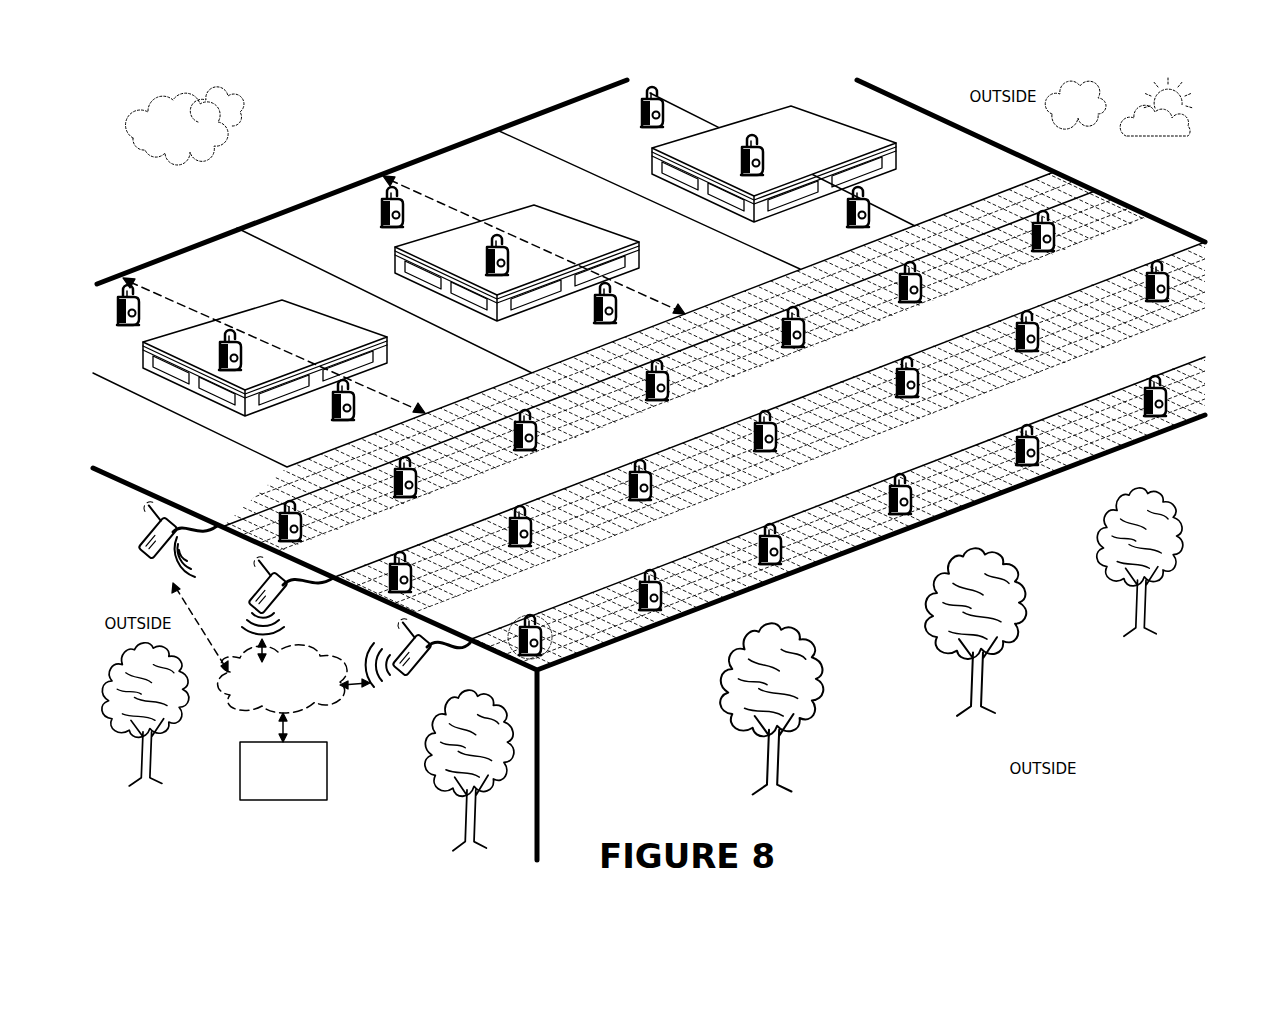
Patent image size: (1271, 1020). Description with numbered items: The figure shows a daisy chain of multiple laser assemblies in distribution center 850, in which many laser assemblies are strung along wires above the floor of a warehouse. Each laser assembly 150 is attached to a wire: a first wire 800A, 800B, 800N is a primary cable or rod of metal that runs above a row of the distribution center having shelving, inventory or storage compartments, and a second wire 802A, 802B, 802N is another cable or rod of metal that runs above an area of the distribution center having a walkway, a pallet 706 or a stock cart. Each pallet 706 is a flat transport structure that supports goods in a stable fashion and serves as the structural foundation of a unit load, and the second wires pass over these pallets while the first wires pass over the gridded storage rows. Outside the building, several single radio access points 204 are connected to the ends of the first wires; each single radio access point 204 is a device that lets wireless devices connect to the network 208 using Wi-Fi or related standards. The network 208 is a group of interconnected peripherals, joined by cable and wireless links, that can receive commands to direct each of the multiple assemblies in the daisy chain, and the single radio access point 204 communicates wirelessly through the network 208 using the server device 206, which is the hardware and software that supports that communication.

The second wire 802A is at (160, 295).
The second wire 802B is at (376, 178).
The second wire 802N is at (627, 84).
The pallet 706 is at (930, 157).
The first wire 800A is at (222, 522).
The first wire 800B is at (337, 578).
The first wire 800N is at (505, 655).
The laser assembly 150 is at (555, 634).
The single radio access point 204 is at (150, 534).
The network 208 is at (282, 679).
The server device 206 is at (283, 771).
The daisy chain of multiple laser assemblies in distribution center 850 is at (374, 789).